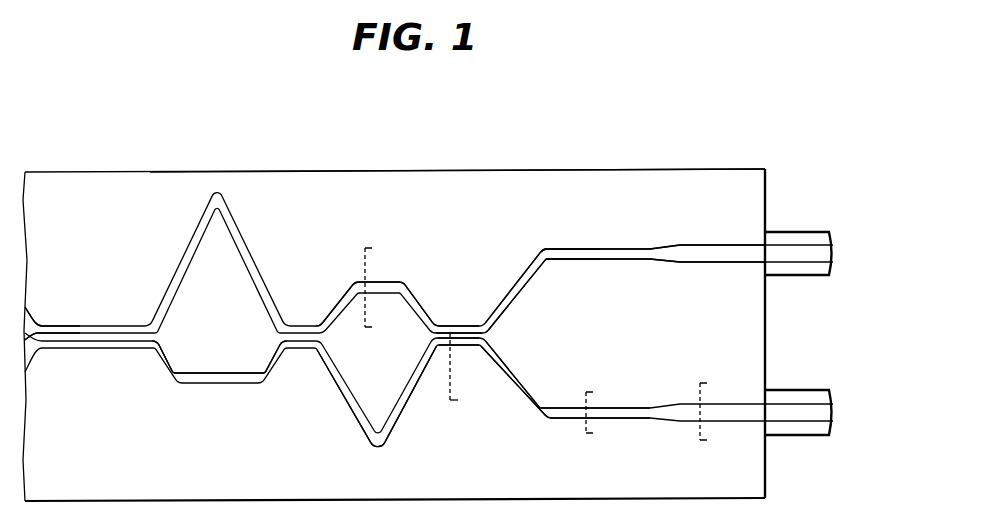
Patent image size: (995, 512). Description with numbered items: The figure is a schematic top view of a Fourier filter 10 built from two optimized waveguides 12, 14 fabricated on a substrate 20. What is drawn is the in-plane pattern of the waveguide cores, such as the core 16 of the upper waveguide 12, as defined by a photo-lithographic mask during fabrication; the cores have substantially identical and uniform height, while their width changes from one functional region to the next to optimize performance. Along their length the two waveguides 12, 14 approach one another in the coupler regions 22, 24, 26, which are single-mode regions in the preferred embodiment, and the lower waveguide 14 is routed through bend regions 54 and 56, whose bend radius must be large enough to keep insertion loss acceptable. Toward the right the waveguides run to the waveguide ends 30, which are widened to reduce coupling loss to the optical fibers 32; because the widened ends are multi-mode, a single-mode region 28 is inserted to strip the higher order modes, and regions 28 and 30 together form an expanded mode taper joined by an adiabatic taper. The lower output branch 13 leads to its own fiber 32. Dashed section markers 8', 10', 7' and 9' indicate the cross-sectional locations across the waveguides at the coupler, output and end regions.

The Fourier filter 10 is at (394, 293).
The optimized waveguide 12 is at (120, 240).
The second output waveguide branch 13 is at (507, 364).
The optimized waveguide 14 is at (95, 429).
The core 16 is at (517, 281).
The substrate 20 is at (405, 183).
The coupler region 22 is at (77, 321).
The coupler region 24 is at (300, 315).
The coupler region 26 is at (456, 315).
The single-mode mode-stripping region 28 is at (587, 241).
The waveguide end 30 is at (691, 240).
The optical fiber 32 is at (812, 231).
The bend region 54 is at (373, 456).
The bend region 56 is at (219, 399).
The section line 8'- 8' is at (391, 286).
The section line 10'- 10' is at (491, 369).
The section line 7'- 7' is at (612, 411).
The section line 9'- 9' is at (727, 410).